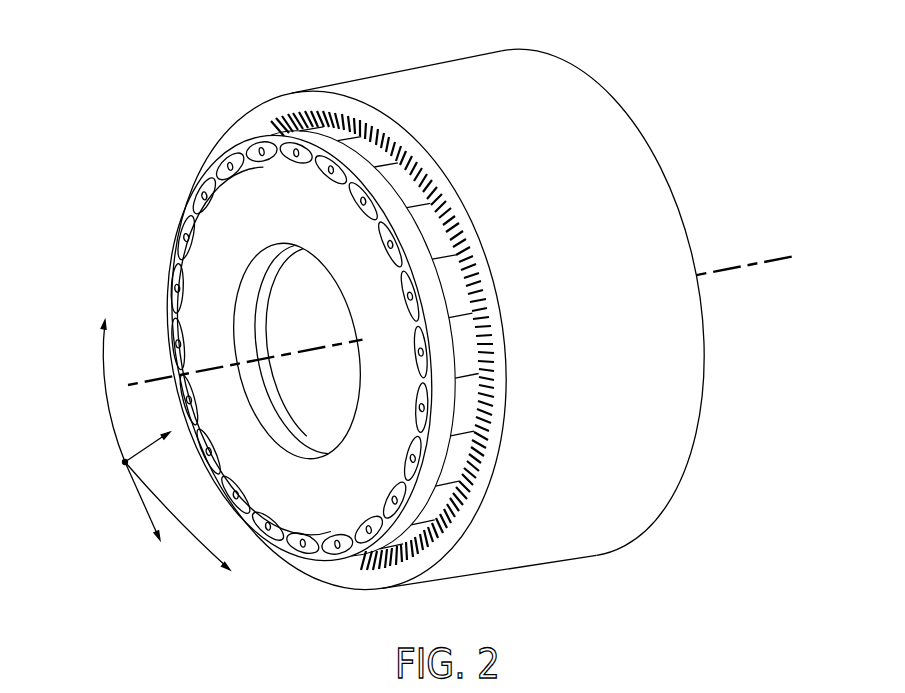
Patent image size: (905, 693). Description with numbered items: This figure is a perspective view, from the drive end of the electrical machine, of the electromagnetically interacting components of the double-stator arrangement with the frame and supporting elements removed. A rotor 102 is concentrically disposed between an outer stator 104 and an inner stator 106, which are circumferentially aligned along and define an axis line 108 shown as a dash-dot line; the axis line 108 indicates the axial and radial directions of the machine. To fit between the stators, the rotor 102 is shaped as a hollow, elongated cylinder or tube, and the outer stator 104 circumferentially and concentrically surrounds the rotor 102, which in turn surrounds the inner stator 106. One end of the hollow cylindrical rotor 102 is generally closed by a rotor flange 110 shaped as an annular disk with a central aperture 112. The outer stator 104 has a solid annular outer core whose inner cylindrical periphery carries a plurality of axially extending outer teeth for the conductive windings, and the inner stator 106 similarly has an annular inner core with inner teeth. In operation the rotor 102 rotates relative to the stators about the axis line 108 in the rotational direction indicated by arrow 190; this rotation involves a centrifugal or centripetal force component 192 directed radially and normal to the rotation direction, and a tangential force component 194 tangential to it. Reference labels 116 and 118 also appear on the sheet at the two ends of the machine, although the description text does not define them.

The rotor 102 is at (168, 270).
The outer stator 104 is at (452, 60).
The inner stator 106 is at (322, 423).
The axis line 108 is at (762, 255).
The rotor flange 110 is at (331, 150).
The central aperture 112 is at (253, 292).
The first end 116 is at (65, 226).
The second end 118 is at (775, 122).
The rotational direction 190 is at (109, 391).
The centrifugal or centripetal force component 192 is at (147, 459).
The tangential force component 194 is at (177, 522).